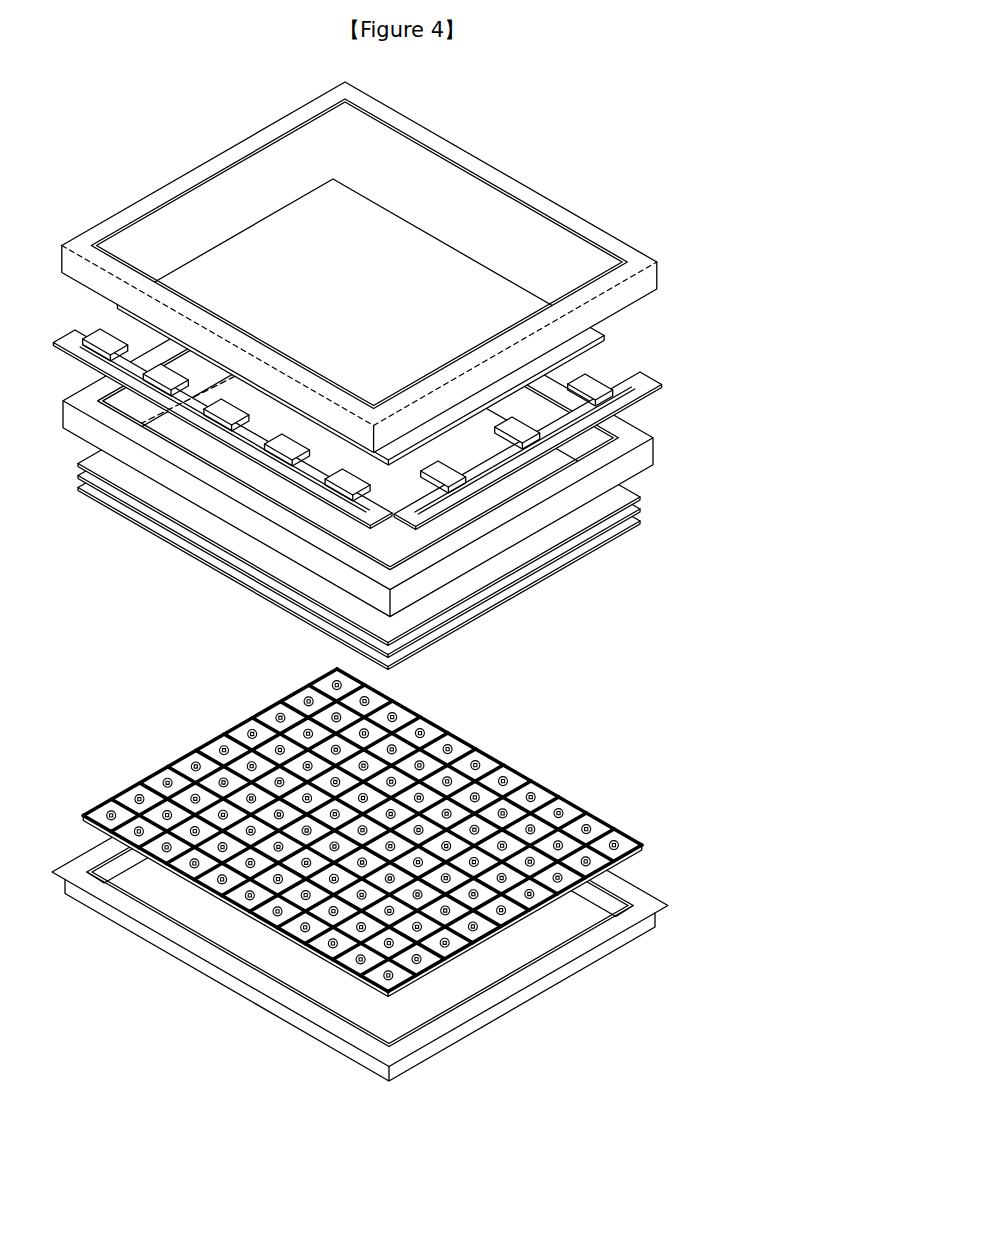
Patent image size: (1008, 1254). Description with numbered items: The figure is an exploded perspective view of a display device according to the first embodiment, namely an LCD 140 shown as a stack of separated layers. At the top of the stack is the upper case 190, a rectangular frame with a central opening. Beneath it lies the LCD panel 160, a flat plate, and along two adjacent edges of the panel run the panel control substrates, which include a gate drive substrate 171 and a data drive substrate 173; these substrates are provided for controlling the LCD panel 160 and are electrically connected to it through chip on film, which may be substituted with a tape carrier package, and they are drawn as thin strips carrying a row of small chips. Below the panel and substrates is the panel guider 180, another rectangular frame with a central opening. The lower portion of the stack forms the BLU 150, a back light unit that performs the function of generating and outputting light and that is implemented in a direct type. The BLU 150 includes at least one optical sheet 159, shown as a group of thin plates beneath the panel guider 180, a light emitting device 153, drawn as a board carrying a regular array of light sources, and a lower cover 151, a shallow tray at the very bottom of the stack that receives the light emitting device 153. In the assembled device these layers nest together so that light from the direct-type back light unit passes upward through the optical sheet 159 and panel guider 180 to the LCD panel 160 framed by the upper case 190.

The LCD 140 is at (667, 106).
The upper case 190 is at (660, 277).
The LCD panel 160 is at (594, 340).
The data drive substrate 173 is at (66, 333).
The gate drive substrate 171 is at (651, 372).
The panel guider 180 is at (648, 438).
The optical sheet 159 is at (383, 494).
The BLU (Back Light Unit) 150 is at (409, 699).
The light emitting device 153 is at (590, 798).
The lower cover 151 is at (668, 899).